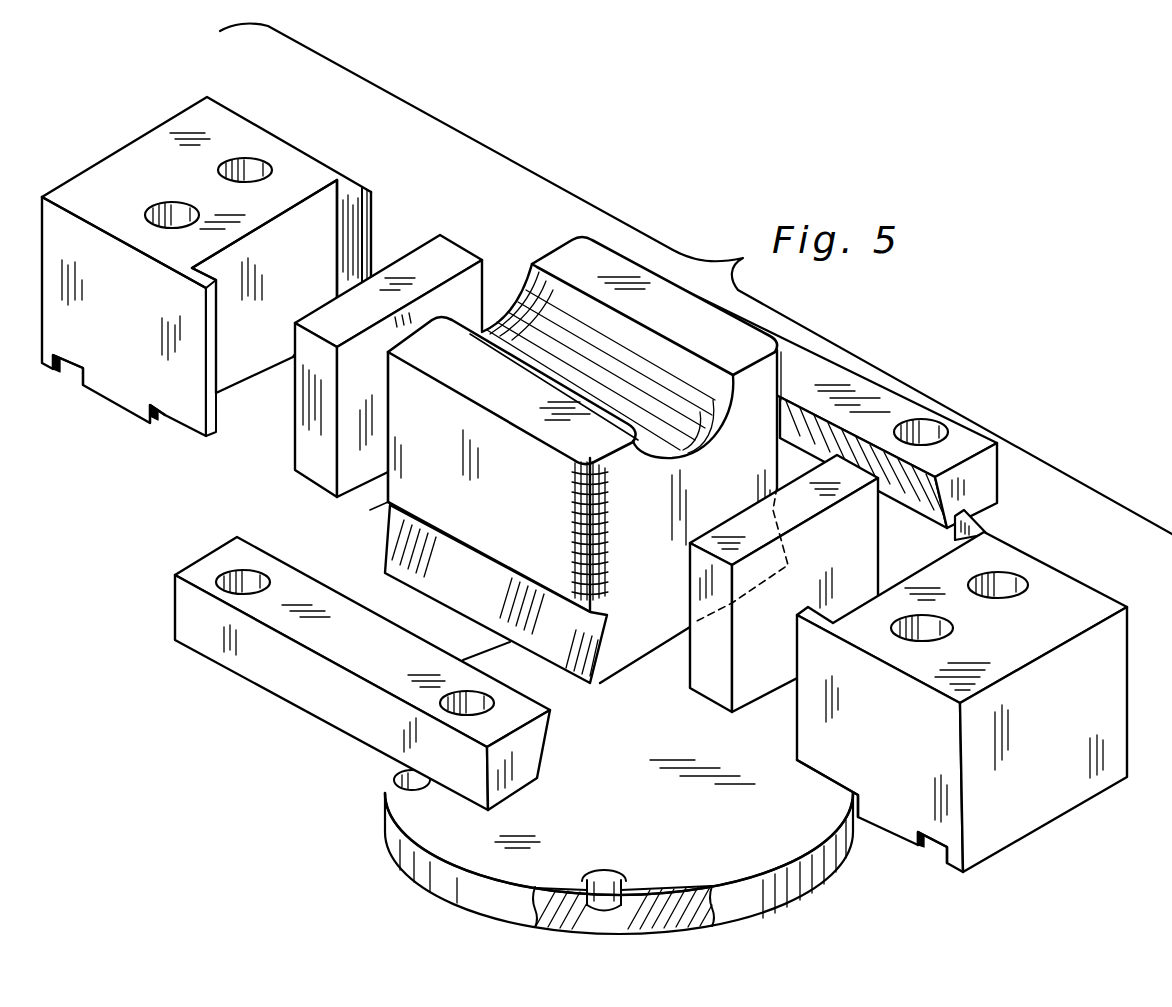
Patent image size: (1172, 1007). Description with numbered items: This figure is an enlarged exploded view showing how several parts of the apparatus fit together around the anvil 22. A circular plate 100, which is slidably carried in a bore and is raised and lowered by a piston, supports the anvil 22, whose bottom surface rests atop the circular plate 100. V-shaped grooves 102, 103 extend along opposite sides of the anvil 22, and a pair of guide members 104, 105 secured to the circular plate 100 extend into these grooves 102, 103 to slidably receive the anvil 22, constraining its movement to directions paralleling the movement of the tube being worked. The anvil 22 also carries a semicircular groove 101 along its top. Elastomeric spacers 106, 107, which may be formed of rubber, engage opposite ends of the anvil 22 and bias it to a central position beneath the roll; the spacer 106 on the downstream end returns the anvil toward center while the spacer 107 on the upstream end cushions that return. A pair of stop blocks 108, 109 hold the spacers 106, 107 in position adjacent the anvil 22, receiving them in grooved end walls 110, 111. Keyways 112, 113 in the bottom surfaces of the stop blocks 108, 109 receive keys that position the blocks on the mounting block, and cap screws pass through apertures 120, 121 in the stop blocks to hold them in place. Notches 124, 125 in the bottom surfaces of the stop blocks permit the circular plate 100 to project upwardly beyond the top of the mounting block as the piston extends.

The anvil 22 is at (385, 500).
The circular plate 100 is at (407, 848).
The semicircular groove 101 is at (697, 420).
The V-shaped groove 102 is at (596, 647).
The V-shaped groove 103 is at (788, 543).
The guide member 104 is at (518, 752).
The guide member 105 is at (975, 484).
The elastomeric spacer 106 is at (712, 678).
The elastomeric spacer 107 is at (308, 466).
The stop block 108 is at (1070, 590).
The stop block 109 is at (242, 130).
The grooved end wall 110 is at (941, 563).
The grooved end wall 111 is at (333, 202).
The keyway 112 is at (937, 845).
The keyway 113 is at (70, 368).
The aperture 120 is at (974, 596).
The aperture 121 is at (215, 170).
The notch 124 is at (818, 783).
The notch 125 is at (166, 426).